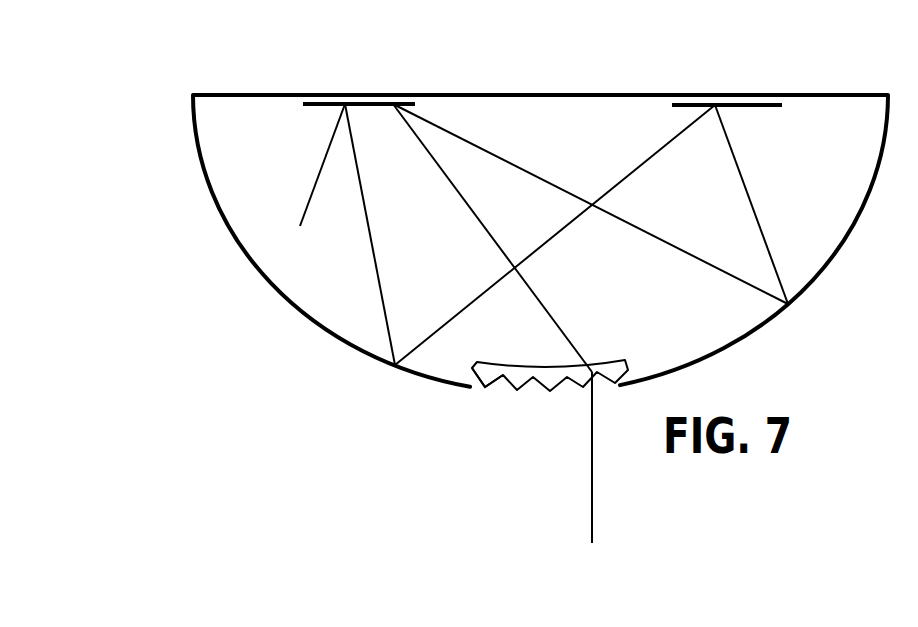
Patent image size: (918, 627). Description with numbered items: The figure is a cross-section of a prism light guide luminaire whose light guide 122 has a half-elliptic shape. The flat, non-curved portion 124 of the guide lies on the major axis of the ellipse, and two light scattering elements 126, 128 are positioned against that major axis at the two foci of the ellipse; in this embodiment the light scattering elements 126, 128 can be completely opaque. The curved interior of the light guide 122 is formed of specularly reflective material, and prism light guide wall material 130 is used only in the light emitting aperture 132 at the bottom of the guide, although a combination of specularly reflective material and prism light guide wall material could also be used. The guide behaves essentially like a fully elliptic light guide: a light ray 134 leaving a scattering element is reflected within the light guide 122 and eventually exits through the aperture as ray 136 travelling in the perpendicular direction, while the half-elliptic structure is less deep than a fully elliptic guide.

The light guide 122 is at (197, 278).
The non-curved portion 124 is at (497, 95).
The light scattering element 126 is at (323, 112).
The light scattering element 128 is at (678, 112).
The prism light guide wall material 130 is at (507, 390).
The light emitting aperture 132 is at (550, 430).
The light ray 134 is at (308, 182).
The ray 136 is at (597, 475).